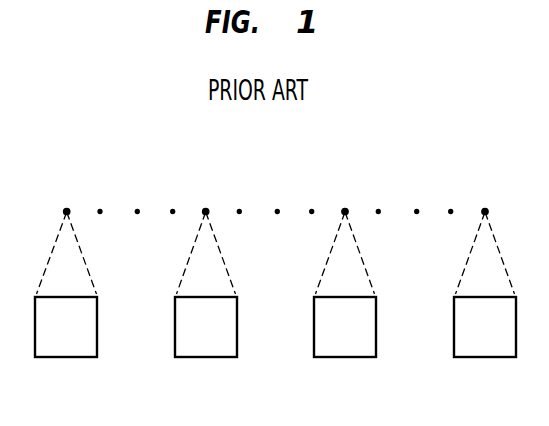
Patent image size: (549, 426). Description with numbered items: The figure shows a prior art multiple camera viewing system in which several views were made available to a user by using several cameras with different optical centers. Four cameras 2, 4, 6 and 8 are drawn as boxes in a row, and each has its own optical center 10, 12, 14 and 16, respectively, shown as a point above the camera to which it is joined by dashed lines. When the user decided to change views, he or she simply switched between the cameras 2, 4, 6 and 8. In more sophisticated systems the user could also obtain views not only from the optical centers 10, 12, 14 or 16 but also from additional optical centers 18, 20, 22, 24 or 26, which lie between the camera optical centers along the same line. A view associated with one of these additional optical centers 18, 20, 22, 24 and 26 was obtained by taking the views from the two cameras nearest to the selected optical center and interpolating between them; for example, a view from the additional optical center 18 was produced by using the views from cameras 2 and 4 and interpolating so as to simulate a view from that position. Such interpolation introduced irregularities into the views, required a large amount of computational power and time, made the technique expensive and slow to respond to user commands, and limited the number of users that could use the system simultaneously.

The camera 2 is at (66, 302).
The camera 4 is at (206, 302).
The camera 6 is at (345, 302).
The camera 8 is at (485, 302).
The optical center 10 is at (67, 205).
The optical center 12 is at (206, 205).
The optical center 14 is at (345, 206).
The optical center 16 is at (485, 206).
The additional optical center 18 is at (137, 204).
The additional optical center 20 is at (172, 204).
The additional optical center 22 is at (277, 205).
The additional optical center 24 is at (378, 205).
The additional optical center 26 is at (417, 205).